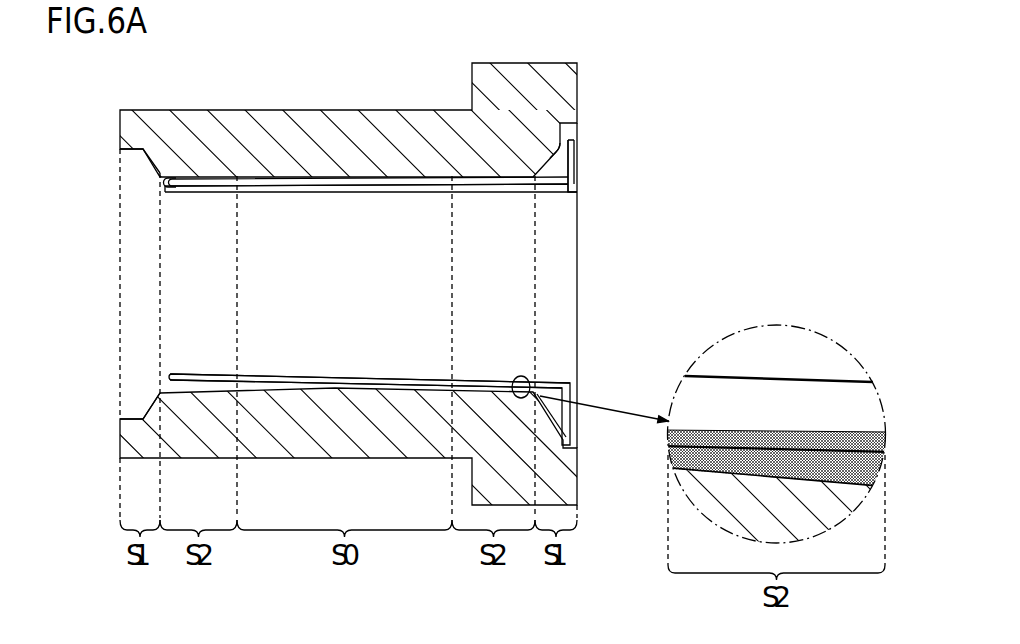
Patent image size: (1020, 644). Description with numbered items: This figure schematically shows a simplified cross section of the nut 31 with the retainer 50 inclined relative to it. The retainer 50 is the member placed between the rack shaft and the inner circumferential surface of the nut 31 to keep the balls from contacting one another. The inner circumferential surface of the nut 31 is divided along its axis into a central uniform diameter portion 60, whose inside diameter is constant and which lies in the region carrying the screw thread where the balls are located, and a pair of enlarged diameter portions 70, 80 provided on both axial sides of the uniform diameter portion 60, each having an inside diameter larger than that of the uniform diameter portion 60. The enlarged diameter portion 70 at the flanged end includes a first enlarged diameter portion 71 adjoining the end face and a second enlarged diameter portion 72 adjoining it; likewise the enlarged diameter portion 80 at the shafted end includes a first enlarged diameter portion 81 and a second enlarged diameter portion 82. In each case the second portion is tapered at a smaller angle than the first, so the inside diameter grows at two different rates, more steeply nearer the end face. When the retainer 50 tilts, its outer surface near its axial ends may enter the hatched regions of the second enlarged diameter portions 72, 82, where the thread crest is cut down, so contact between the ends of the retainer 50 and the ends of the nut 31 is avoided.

The nut 31 is at (578, 83).
The retainer 50 is at (580, 185).
The uniform diameter portion 60 is at (325, 199).
The enlarged diameter portion 70 is at (551, 203).
The first enlarged diameter portion 71 is at (553, 162).
The second enlarged diameter portion 72 is at (508, 186).
The enlarged diameter portion 80 is at (148, 192).
The first enlarged diameter portion 81 is at (147, 163).
The second enlarged diameter portion 82 is at (180, 187).